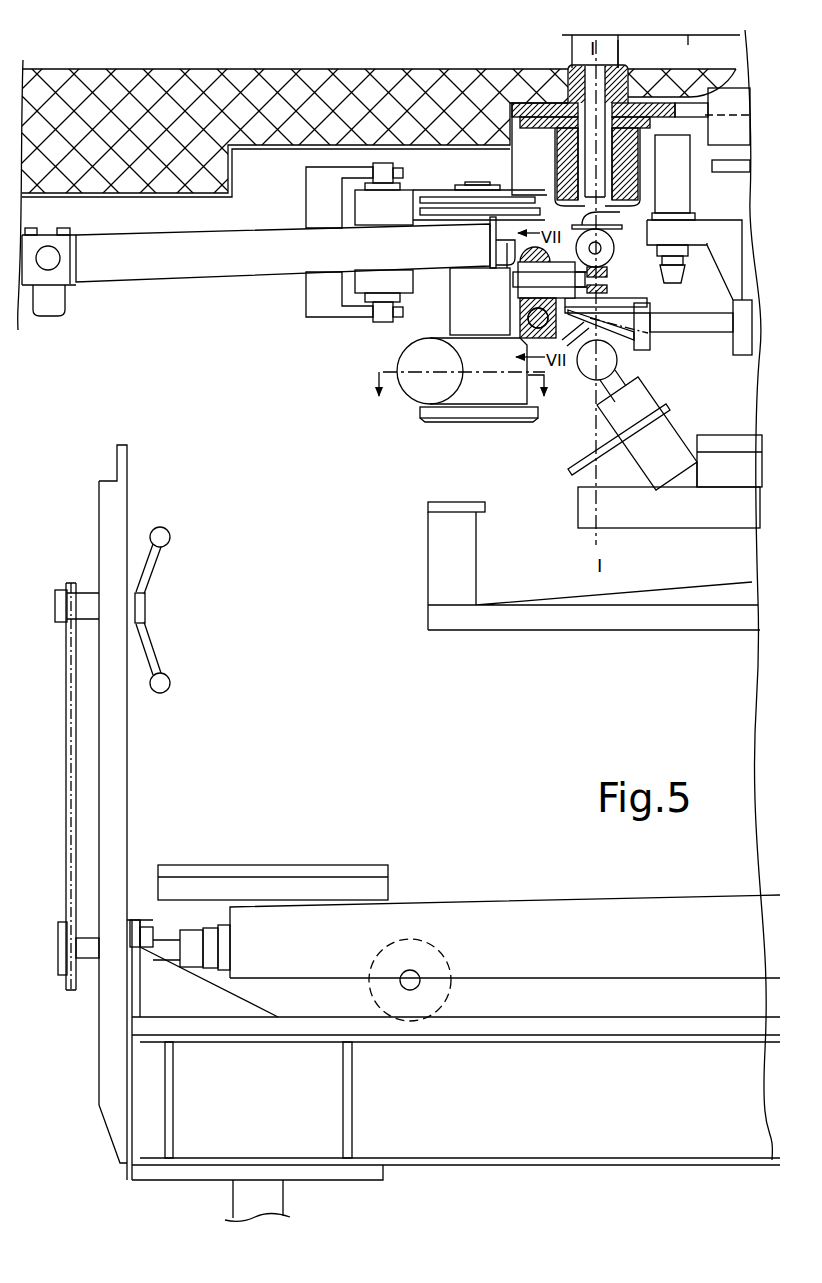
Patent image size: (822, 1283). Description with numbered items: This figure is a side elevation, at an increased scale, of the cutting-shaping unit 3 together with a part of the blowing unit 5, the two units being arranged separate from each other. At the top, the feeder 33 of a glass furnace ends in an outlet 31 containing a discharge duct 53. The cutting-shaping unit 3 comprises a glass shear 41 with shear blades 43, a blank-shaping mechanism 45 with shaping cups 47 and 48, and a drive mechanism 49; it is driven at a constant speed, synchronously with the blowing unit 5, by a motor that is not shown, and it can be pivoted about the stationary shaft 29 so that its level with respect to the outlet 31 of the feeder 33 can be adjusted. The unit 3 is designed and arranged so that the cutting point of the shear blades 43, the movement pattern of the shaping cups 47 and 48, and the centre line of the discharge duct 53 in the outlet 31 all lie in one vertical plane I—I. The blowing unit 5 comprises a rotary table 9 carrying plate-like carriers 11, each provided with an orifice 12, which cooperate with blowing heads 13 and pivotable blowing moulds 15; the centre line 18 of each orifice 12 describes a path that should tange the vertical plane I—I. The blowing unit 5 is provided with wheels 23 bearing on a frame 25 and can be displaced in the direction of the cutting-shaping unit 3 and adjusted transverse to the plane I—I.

The cutting-shaping unit 3 is at (356, 414).
The blowing unit 5 is at (518, 658).
The rotary table 9 is at (578, 507).
The plate-like carrier 11 is at (636, 350).
The orifice 12 is at (606, 302).
The blowing head 13 is at (690, 196).
The blowing mould 15 is at (650, 393).
The centre line 18 is at (650, 345).
The wheel 23 is at (450, 998).
The frame 25 is at (575, 1167).
The stationary shaft 29 is at (60, 262).
The outlet 31 is at (554, 163).
The feeder 33 is at (692, 54).
The glass shear 41 is at (546, 190).
The shear blade 43 is at (612, 224).
The blank-shaping mechanism 45 is at (518, 317).
The shaping cup 47 is at (682, 302).
The shaping cup 48 is at (613, 250).
The drive mechanism 49 is at (455, 424).
The discharge duct 53 is at (585, 75).